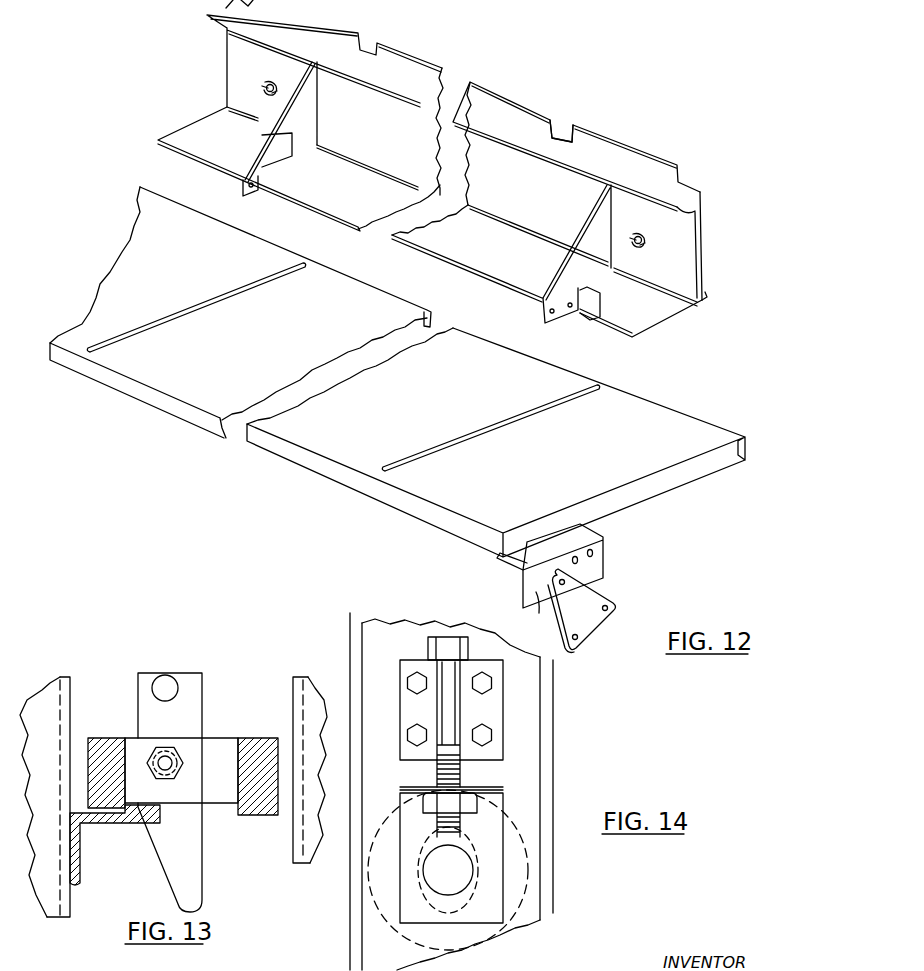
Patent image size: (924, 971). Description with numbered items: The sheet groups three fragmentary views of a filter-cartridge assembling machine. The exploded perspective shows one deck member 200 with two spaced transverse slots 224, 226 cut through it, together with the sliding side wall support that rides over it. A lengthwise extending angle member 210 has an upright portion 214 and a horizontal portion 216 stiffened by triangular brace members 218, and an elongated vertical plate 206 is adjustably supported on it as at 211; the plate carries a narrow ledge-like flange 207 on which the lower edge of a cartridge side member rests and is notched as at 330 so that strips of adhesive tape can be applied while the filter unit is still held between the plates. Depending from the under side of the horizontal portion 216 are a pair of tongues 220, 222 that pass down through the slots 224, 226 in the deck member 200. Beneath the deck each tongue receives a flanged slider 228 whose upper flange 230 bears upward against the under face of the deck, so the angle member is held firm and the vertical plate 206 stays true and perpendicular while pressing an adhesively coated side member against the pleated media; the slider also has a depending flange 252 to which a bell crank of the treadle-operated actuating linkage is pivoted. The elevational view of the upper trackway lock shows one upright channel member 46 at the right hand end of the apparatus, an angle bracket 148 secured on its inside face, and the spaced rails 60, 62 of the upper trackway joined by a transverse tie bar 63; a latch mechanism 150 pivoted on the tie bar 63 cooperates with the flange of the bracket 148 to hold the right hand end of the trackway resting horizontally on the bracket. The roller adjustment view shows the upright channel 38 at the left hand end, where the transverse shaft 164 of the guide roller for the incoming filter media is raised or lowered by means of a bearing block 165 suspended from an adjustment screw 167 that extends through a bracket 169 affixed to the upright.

In FIG. 12, the deck member 200 is at (653, 478).
In FIG. 12, the vertical plate 206 is at (642, 142).
In FIG. 12, the ledge-like flange 207 is at (707, 293).
In FIG. 12, the angle member 210 is at (690, 222).
In FIG. 12, the adjustable support 211 is at (262, 88).
In FIG. 12, the upright portion 214 is at (235, 57).
In FIG. 12, the horizontal portion 216 is at (197, 133).
In FIG. 12, the triangular brace member 218 is at (262, 138).
In FIG. 12, the depending tongue 220 is at (542, 313).
In FIG. 12, the depending tongue 222 is at (252, 188).
In FIG. 12, the transverse slot 224 is at (407, 467).
In FIG. 12, the transverse slot 226 is at (112, 342).
In FIG. 12, the flanged slider 228 is at (597, 572).
In FIG. 12, the upper flange 230 is at (508, 567).
In FIG. 12, the depending flange 252 is at (531, 614).
In FIG. 12, the notch 330 is at (563, 125).
In FIG. 13, the channel member 46 is at (70, 897).
In FIG. 13, the rail 60 is at (260, 747).
In FIG. 13, the rail 62 is at (117, 738).
In FIG. 13, the transverse tie bar 63 is at (225, 750).
In FIG. 13, the angle bracket 148 is at (82, 837).
In FIG. 13, the latch mechanism 150 is at (193, 698).
In FIG. 14, the upright channel 38 is at (513, 820).
In FIG. 14, the transverse shaft 164 is at (470, 863).
In FIG. 14, the bearing block 165 is at (503, 790).
In FIG. 14, the adjustment screw 167 is at (467, 772).
In FIG. 14, the bracket 169 is at (497, 708).